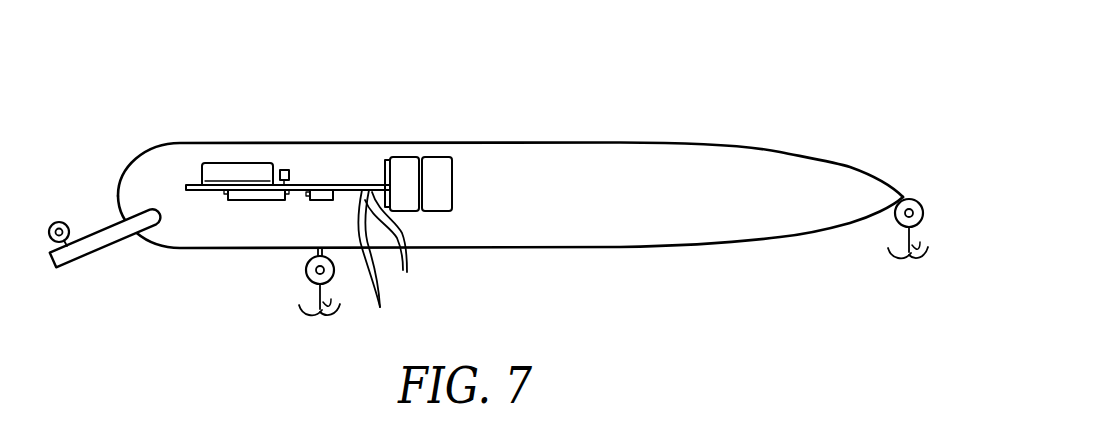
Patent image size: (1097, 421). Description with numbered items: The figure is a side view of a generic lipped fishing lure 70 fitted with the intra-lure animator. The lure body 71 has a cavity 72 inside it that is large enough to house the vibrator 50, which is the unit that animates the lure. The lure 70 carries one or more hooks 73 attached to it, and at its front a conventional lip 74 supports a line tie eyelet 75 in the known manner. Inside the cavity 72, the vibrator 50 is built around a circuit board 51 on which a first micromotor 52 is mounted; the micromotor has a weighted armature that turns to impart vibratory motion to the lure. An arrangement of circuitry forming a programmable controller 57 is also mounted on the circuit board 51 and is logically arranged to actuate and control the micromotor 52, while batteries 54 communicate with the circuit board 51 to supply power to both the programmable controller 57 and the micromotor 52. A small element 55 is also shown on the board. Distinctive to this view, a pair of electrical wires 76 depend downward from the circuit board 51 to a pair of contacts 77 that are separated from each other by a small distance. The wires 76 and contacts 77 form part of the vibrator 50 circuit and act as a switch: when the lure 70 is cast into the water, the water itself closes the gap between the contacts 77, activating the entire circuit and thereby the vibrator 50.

The vibrator 50 is at (319, 186).
The circuit board 51 is at (341, 185).
The first micromotor 52 is at (230, 163).
The batteries 54 is at (433, 157).
The switch 55 is at (283, 170).
The programmable controller 57 is at (268, 200).
The fishing lure 70 is at (803, 125).
The lure body 71 is at (720, 245).
The cavity 72 is at (490, 163).
The hooks 73 is at (315, 315).
The lip 74 is at (112, 244).
The line tie eyelet 75 is at (62, 222).
The electrical wires 76 is at (391, 246).
The contacts 77 is at (375, 264).